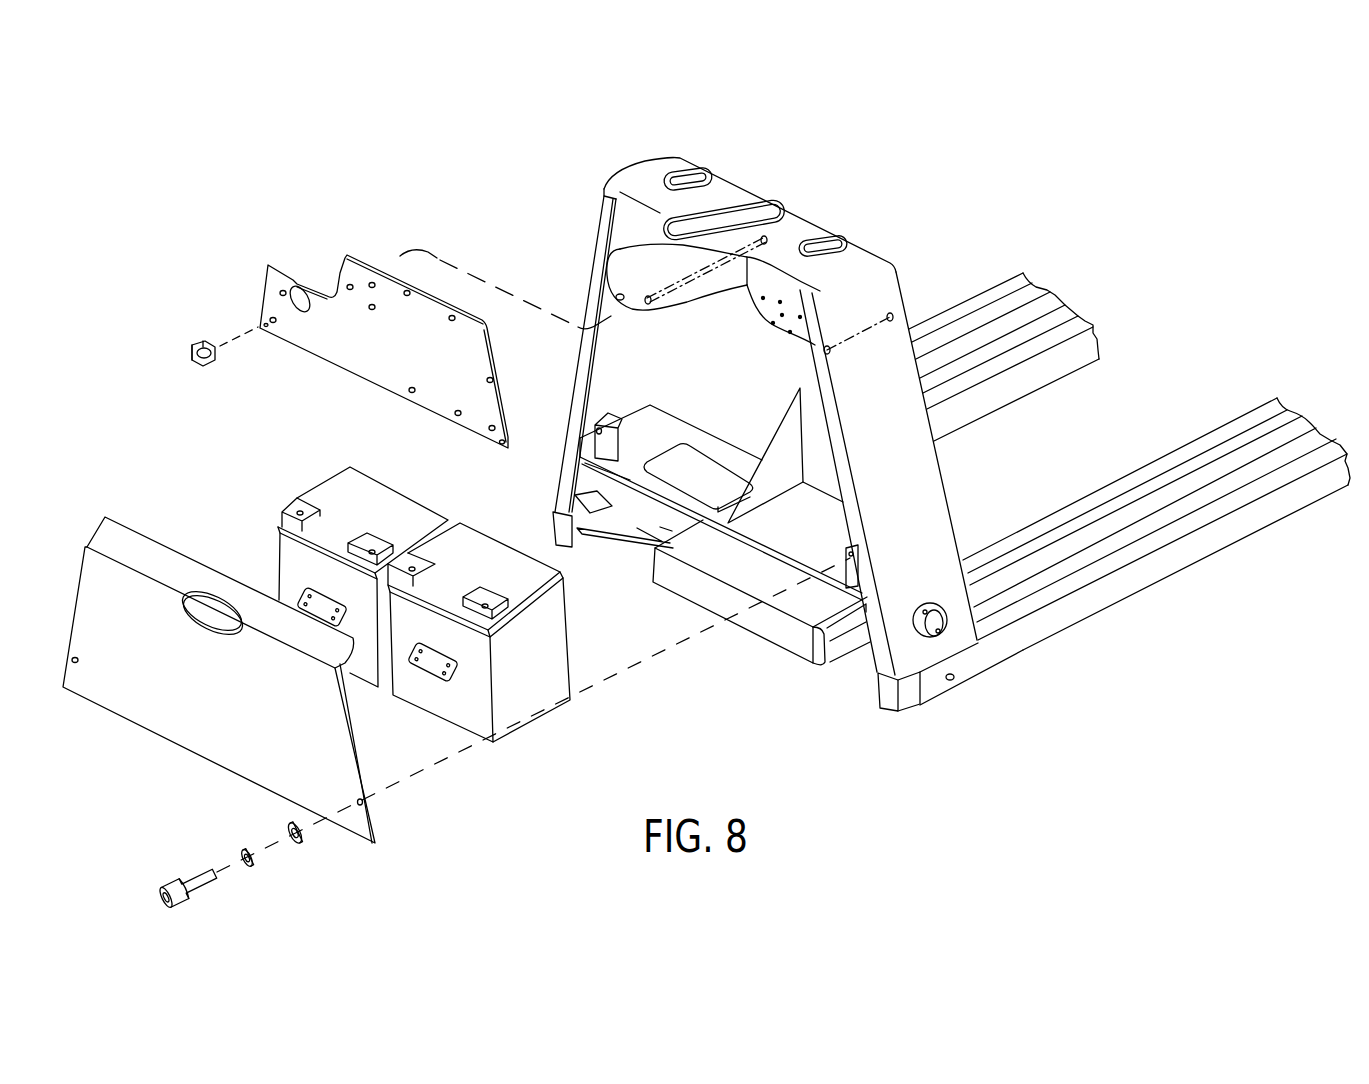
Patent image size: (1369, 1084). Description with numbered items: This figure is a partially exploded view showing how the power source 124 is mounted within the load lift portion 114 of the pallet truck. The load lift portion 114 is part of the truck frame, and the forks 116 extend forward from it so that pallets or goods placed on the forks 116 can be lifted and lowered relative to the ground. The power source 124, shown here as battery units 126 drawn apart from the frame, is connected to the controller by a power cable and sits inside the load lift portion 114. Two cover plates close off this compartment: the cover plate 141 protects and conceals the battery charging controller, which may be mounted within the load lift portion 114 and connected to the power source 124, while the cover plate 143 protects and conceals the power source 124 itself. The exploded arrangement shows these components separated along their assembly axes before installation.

The load lift portion 114 is at (648, 162).
The forks 116 is at (995, 293).
The power source 124 is at (538, 726).
The battery 126 is at (470, 538).
The cover plate 141 is at (347, 353).
The cover plate 143 is at (162, 727).